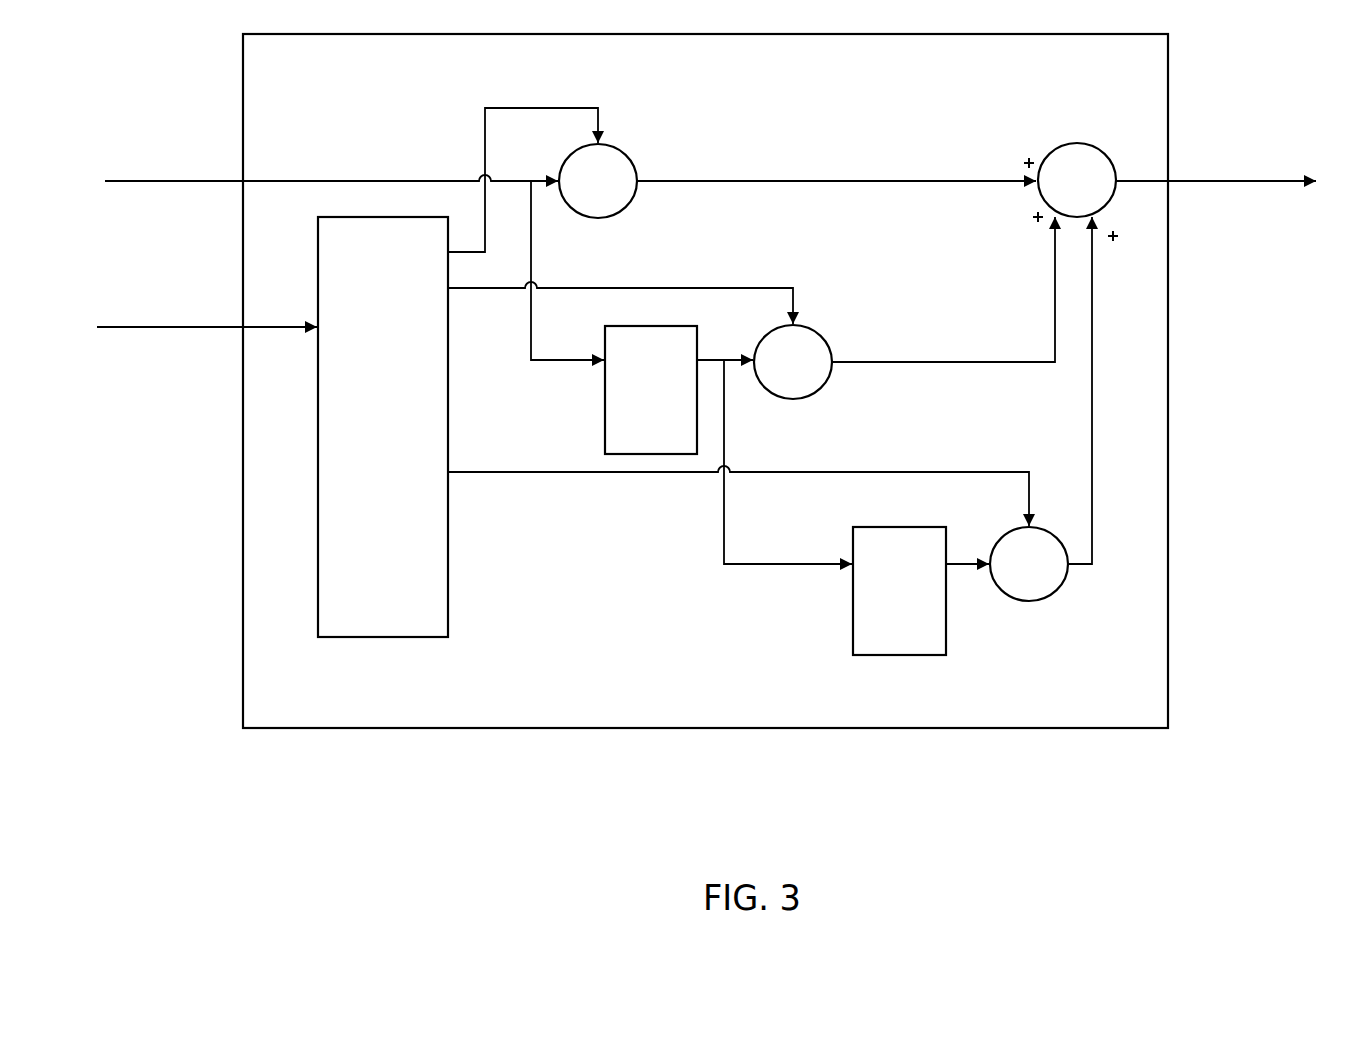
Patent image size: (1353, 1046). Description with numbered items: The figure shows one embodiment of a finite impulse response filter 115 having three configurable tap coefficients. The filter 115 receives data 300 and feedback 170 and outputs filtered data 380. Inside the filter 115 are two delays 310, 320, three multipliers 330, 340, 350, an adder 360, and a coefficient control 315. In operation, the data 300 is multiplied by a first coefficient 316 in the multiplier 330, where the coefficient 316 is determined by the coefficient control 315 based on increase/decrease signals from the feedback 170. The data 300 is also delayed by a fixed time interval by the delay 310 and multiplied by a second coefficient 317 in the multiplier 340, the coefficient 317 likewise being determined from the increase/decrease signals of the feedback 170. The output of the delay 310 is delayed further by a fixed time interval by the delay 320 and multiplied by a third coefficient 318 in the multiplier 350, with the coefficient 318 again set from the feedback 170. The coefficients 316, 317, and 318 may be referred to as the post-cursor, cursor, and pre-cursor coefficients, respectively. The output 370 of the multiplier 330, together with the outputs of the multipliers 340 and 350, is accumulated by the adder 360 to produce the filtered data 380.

The FIR filter 115 is at (565, 65).
The data 300 is at (331, 166).
The feedback 170 is at (207, 306).
The coefficient control 315 is at (383, 427).
The first coefficient 316 is at (562, 106).
The second coefficient 317 is at (670, 288).
The third coefficient 318 is at (855, 472).
The delay 310 is at (642, 317).
The delay 320 is at (856, 507).
The multiplier 330 is at (625, 152).
The multiplier 340 is at (828, 332).
The multiplier 350 is at (1052, 595).
The adder 360 is at (1075, 143).
The multiplier output line 370 is at (872, 179).
The filtered data 380 is at (1230, 165).